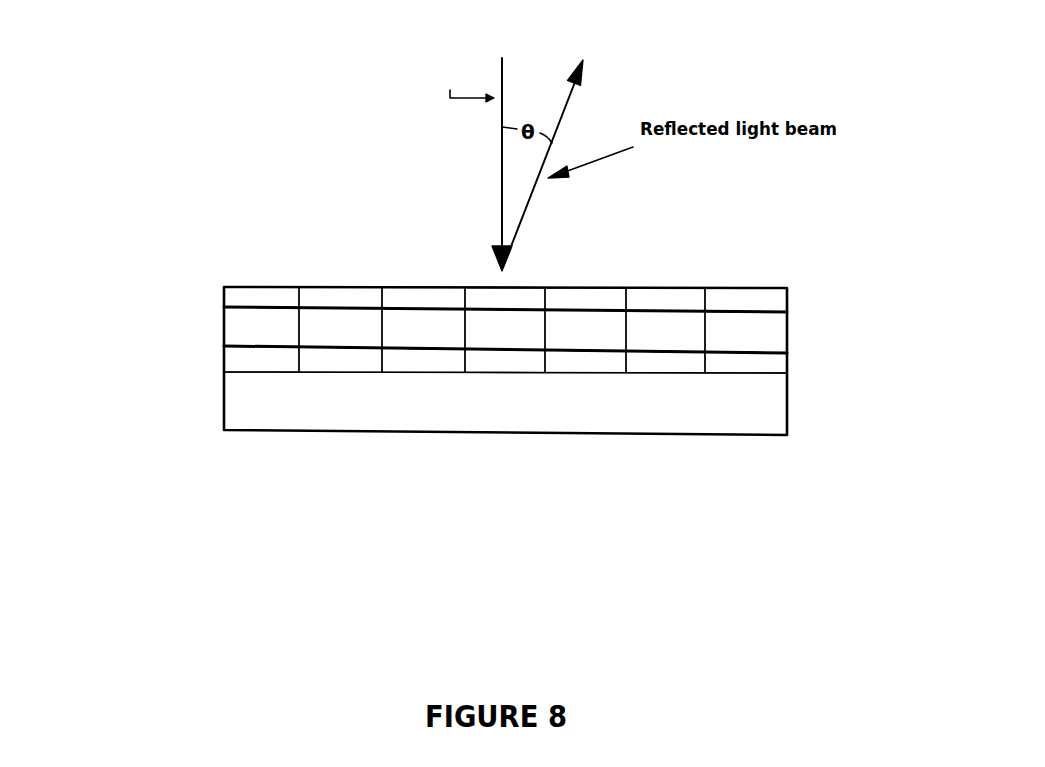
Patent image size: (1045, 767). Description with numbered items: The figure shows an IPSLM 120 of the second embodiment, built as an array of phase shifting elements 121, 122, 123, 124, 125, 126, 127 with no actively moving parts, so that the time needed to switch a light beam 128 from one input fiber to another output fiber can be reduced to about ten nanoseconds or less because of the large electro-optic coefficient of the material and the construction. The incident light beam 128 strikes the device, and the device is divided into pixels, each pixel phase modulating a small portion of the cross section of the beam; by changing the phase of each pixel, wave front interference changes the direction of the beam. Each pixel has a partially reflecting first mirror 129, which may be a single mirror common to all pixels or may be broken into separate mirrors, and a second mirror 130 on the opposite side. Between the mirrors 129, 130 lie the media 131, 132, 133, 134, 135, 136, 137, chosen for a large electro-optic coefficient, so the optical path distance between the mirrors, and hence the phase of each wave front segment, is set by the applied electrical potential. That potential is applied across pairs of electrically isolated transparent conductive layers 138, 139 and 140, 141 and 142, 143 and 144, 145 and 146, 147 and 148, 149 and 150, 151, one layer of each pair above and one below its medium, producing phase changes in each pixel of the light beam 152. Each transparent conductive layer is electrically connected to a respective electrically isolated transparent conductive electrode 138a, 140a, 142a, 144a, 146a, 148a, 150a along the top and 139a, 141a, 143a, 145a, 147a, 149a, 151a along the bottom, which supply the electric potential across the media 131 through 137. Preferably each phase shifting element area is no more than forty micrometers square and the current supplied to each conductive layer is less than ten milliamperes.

The IPSLM 120 is at (240, 401).
The phase shifting element 121 is at (238, 324).
The phase shifting element 122 is at (352, 348).
The phase shifting element 123 is at (430, 338).
The phase shifting element 124 is at (515, 331).
The phase shifting element 125 is at (590, 330).
The phase shifting element 126 is at (672, 331).
The phase shifting element 127 is at (752, 337).
The light beam 128 is at (500, 206).
The partially reflecting first mirror 129 is at (224, 304).
The mirror 130 is at (224, 348).
The media 131 is at (285, 341).
The media 132 is at (344, 341).
The media 133 is at (417, 341).
The media 134 is at (502, 342).
The media 135 is at (582, 342).
The media 136 is at (662, 343).
The media 137 is at (742, 343).
The transparent conductive layer 138 is at (261, 297).
The transparent conductive layer 140 is at (340, 297).
The transparent conductive layer 142 is at (423, 298).
The transparent conductive layer 144 is at (505, 298).
The transparent conductive layer 146 is at (585, 299).
The transparent conductive layer 148 is at (665, 300).
The transparent conductive layer 150 is at (746, 300).
The transparent conductive layer 139 is at (261, 359).
The transparent conductive layer 141 is at (340, 359).
The transparent conductive layer 143 is at (423, 360).
The transparent conductive layer 145 is at (505, 361).
The transparent conductive layer 147 is at (585, 361).
The transparent conductive layer 149 is at (665, 362).
The transparent conductive layer 151 is at (746, 362).
The transparent conductive electrode 138a is at (268, 286).
The transparent conductive electrode 140a is at (336, 287).
The transparent conductive electrode 142a is at (405, 287).
The transparent conductive electrode 144a is at (512, 288).
The transparent conductive electrode 146a is at (593, 288).
The transparent conductive electrode 148a is at (676, 288).
The transparent conductive electrode 150a is at (722, 288).
The transparent conductive electrode 139a is at (280, 372).
The transparent conductive electrode 141a is at (324, 372).
The transparent conductive electrode 143a is at (404, 372).
The transparent conductive electrode 145a is at (488, 372).
The transparent conductive electrode 147a is at (565, 372).
The transparent conductive electrode 149a is at (648, 372).
The transparent conductive electrode 151a is at (730, 372).
The light beam 152 is at (224, 372).